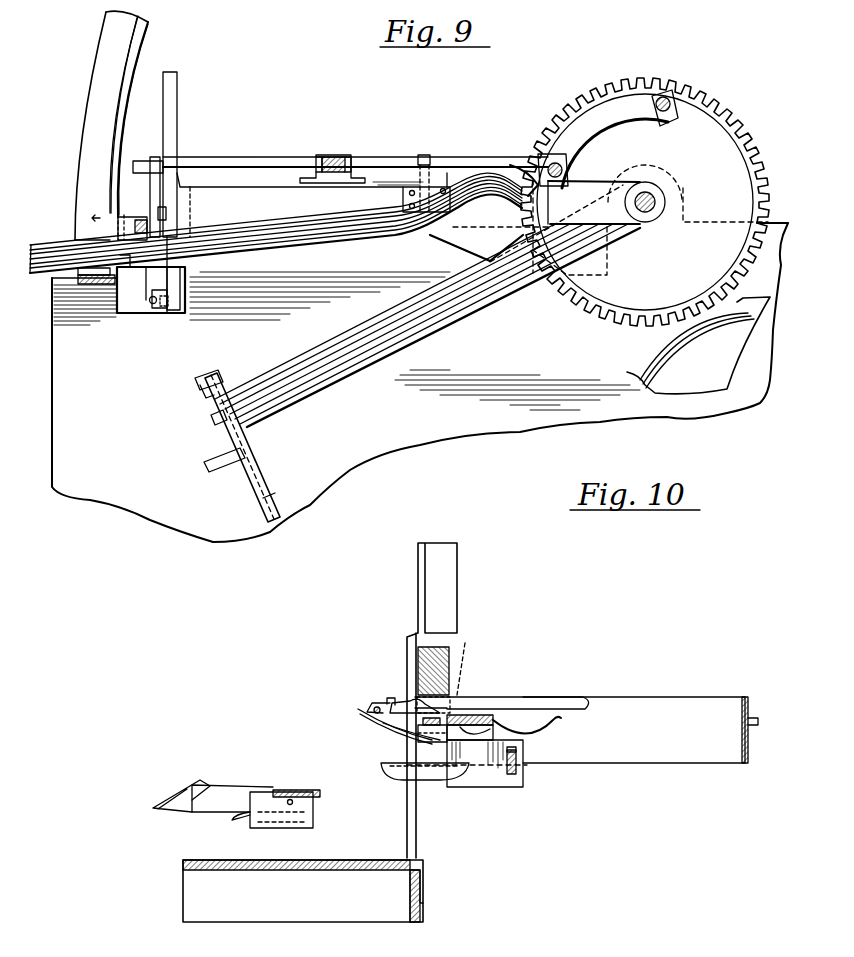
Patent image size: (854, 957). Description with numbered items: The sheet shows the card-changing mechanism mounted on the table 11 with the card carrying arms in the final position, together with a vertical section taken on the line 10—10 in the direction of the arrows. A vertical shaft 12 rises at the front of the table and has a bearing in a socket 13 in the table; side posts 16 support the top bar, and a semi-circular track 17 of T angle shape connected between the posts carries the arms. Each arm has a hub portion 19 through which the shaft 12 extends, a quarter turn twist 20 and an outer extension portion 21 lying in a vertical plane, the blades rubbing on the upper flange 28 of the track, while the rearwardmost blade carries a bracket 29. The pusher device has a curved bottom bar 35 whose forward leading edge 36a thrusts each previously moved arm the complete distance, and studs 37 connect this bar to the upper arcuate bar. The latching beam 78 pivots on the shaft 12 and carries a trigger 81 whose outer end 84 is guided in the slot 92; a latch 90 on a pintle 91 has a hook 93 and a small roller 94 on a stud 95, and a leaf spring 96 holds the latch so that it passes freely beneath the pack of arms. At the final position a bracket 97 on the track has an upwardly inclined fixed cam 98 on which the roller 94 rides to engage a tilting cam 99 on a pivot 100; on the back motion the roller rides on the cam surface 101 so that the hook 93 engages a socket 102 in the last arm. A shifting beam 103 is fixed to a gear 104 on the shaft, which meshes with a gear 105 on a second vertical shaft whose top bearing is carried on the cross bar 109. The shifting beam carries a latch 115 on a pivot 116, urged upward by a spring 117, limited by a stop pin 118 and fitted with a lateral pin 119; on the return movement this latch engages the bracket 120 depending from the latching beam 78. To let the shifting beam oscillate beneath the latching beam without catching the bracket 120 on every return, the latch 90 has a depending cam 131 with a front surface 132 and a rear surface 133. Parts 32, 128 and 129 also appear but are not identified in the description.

In FIG. 9, the section line 10 is at (278, 556).
In FIG. 9, the table 11 is at (168, 511).
In FIG. 10, the table 11 is at (375, 919).
In FIG. 9, the vertical shaft 12 is at (655, 195).
In FIG. 9, the socket 13 is at (103, 310).
In FIG. 9, the side posts 16 is at (143, 269).
In FIG. 10, the side posts 16 is at (447, 607).
In FIG. 9, the semi-circular track 17 is at (125, 47).
In FIG. 10, the semi-circular track 17 is at (645, 707).
In FIG. 9, the hub portion 19 is at (600, 193).
In FIG. 9, the quarter turn twist 20 is at (480, 212).
In FIG. 9, the outer extension portion 21 is at (390, 235).
In FIG. 9, the upper flange 28 is at (138, 64).
In FIG. 9, the bracket 29 is at (80, 279).
In FIG. 9, the curved guide 32 is at (92, 101).
In FIG. 9, the curved bottom bar 35 is at (615, 100).
In FIG. 9, the leading edge 36a is at (520, 217).
In FIG. 9, the studs 37 is at (550, 150).
In FIG. 9, the latching beam 78 is at (235, 187).
In FIG. 10, the latching beam 78 is at (470, 714).
In FIG. 9, the trigger 81 is at (375, 163).
In FIG. 10, the trigger 81 is at (507, 752).
In FIG. 9, the outer end 84 is at (192, 163).
In FIG. 9, the latch 90 is at (172, 118).
In FIG. 10, the latch 90 is at (575, 695).
In FIG. 9, the pintle 91 is at (166, 212).
In FIG. 10, the pintle 91 is at (467, 712).
In FIG. 10, the slot 92 is at (518, 755).
In FIG. 9, the hook 93 is at (172, 310).
In FIG. 10, the hook 93 is at (378, 702).
In FIG. 9, the roller 94 is at (165, 306).
In FIG. 10, the roller 94 is at (372, 706).
In FIG. 9, the stud 95 is at (155, 305).
In FIG. 10, the stud 95 is at (357, 715).
In FIG. 10, the leaf spring 96 is at (553, 730).
In FIG. 9, the bracket 97 is at (140, 295).
In FIG. 10, the bracket 97 is at (393, 737).
In FIG. 10, the fixed cam 98 is at (387, 730).
In FIG. 9, the tilting cam 99 is at (140, 275).
In FIG. 10, the tilting cam 99 is at (393, 696).
In FIG. 10, the pivot 100 is at (476, 661).
In FIG. 9, the cam surface 101 is at (155, 295).
In FIG. 10, the cam surface 101 is at (405, 702).
In FIG. 10, the socket 102 is at (425, 660).
In FIG. 9, the shifting beam 103 is at (440, 318).
In FIG. 10, the shifting beam 103 is at (288, 790).
In FIG. 9, the gear 104 is at (640, 295).
In FIG. 9, the gear 105 is at (718, 374).
In FIG. 9, the cross bar 109 is at (140, 207).
In FIG. 9, the latch 115 is at (258, 475).
In FIG. 10, the latch 115 is at (192, 805).
In FIG. 9, the pivot 116 is at (200, 392).
In FIG. 10, the spring 117 is at (238, 822).
In FIG. 9, the stop pin 118 is at (214, 425).
In FIG. 9, the lateral pin 119 is at (205, 472).
In FIG. 10, the bracket 120 is at (485, 752).
In FIG. 9, the clamp 128 is at (335, 157).
In FIG. 9, the clamp jaw 129 is at (318, 160).
In FIG. 10, the depending cam 131 is at (400, 775).
In FIG. 10, the front surface 132 is at (392, 778).
In FIG. 10, the rear surface 133 is at (457, 782).